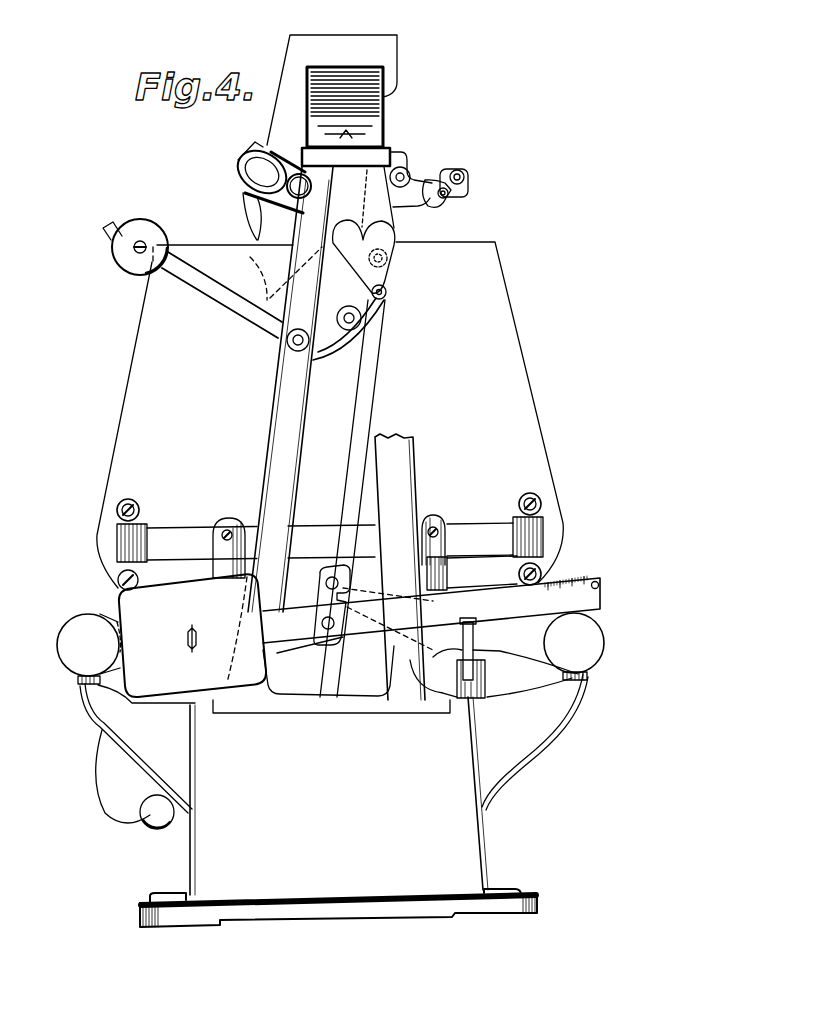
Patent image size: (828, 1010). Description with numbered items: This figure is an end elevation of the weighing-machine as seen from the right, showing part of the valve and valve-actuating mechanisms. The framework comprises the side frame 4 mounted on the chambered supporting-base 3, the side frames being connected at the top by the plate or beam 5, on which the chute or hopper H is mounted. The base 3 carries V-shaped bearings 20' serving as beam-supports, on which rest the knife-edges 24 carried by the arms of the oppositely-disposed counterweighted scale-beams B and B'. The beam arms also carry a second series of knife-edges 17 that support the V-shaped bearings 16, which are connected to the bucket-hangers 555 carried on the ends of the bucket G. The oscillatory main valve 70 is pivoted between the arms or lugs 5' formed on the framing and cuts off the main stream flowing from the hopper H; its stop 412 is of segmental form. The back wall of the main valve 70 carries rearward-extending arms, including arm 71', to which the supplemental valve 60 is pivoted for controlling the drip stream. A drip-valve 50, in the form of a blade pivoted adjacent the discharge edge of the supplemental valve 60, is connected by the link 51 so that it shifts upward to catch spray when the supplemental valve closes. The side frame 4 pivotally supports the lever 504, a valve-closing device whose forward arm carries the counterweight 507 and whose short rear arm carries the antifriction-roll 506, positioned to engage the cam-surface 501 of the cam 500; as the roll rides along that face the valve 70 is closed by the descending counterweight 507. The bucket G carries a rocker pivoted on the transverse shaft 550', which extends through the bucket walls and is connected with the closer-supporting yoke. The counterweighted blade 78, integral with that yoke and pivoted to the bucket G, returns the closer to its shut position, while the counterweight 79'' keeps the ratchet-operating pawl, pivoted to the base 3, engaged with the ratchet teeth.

The chute or hopper H is at (392, 53).
The plate or beam 5 is at (359, 116).
The supplemental valve 60 is at (413, 187).
The link 51 is at (458, 172).
The drip-valve 50 is at (462, 188).
The arms or lugs 5' is at (264, 177).
The stop for the main valve 412 is at (256, 210).
The main valve 70 is at (275, 235).
The rearward-extending arm 71' is at (378, 198).
The cam 500 is at (400, 233).
The cam-surface 501 is at (390, 250).
The antifriction-roll 506 is at (388, 293).
The transverse shaft 550' is at (371, 329).
The counterweight 507 is at (135, 263).
The lever 504 is at (235, 300).
The side frame 4 is at (290, 447).
The bucket G is at (330, 415).
The bucket-hangers 555 is at (473, 532).
The V-shaped bearings 16 is at (445, 590).
The pivot or knife-edge 24 is at (473, 623).
The V-shaped bearings 20' is at (487, 658).
The pivot or knife-edge 17 is at (433, 643).
The counterweighted scale-beam B' is at (161, 633).
The counterweighted scale-beam B is at (526, 643).
The chambered supporting-base 3 is at (300, 880).
The counterweighted arm or blade 78 is at (108, 790).
The counterweight 79'' is at (151, 823).